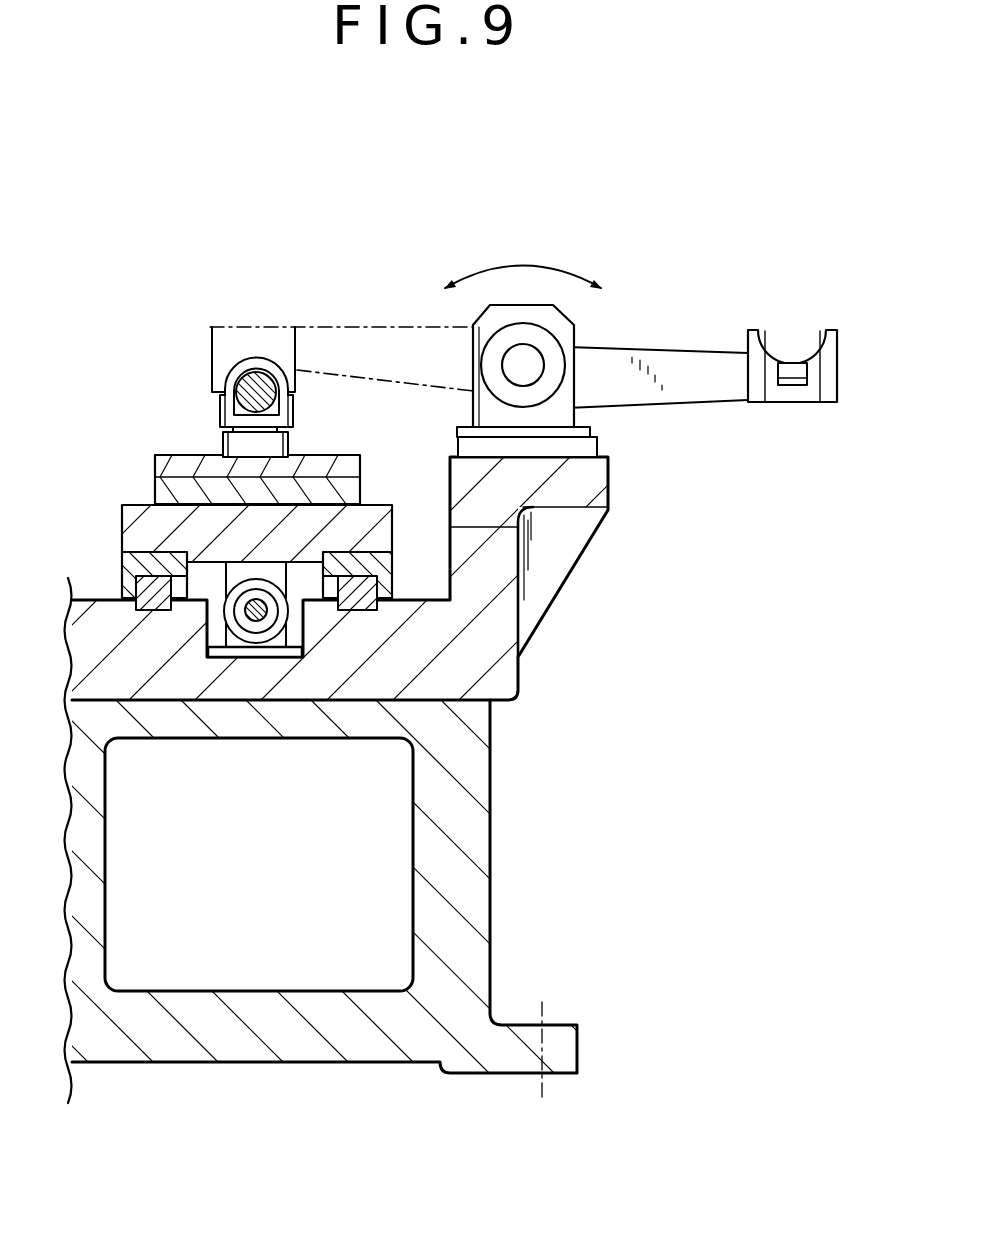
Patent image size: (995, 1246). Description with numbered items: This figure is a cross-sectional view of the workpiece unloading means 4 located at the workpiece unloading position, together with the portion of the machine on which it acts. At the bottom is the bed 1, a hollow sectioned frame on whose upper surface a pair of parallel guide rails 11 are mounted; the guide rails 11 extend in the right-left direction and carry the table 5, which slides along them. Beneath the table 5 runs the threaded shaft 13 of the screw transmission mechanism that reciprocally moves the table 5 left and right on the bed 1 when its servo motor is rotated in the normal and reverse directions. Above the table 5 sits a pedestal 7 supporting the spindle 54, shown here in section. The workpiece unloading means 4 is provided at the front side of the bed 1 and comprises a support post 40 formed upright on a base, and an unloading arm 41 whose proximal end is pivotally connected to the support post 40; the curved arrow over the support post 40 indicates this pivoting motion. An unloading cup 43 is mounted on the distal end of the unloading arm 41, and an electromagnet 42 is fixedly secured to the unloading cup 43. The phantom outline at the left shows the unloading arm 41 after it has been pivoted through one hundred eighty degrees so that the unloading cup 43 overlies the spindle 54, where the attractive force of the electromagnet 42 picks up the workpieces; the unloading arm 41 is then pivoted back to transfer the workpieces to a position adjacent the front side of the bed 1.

The bed 1 is at (443, 800).
The workpiece unloading means 4 is at (683, 273).
The table 5 is at (145, 513).
The pedestal 7 is at (283, 417).
The guide rails 11 is at (123, 586).
The threaded shaft 13 is at (256, 621).
The support post 40 is at (570, 327).
The unloading arm 41 is at (357, 340).
The electromagnet 42 is at (792, 368).
The unloading cup 43 is at (212, 340).
The spindle 54 is at (225, 382).